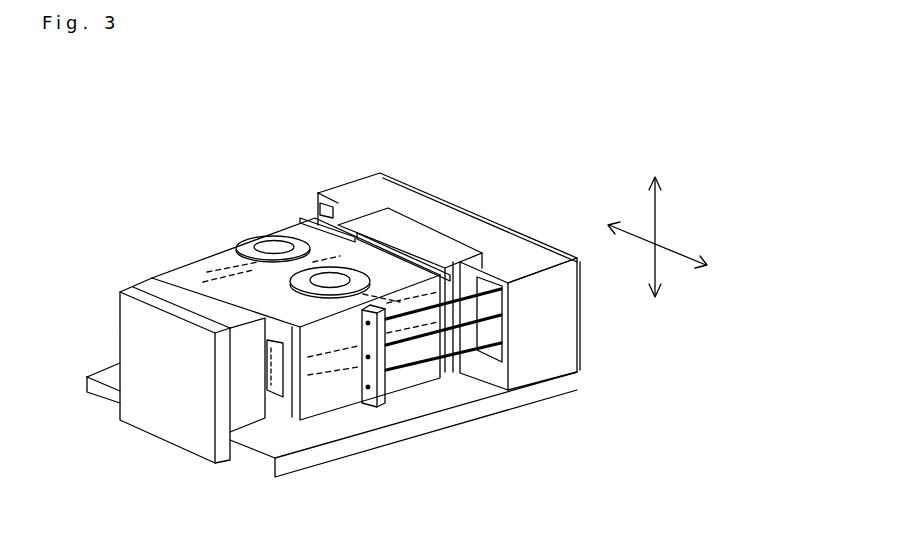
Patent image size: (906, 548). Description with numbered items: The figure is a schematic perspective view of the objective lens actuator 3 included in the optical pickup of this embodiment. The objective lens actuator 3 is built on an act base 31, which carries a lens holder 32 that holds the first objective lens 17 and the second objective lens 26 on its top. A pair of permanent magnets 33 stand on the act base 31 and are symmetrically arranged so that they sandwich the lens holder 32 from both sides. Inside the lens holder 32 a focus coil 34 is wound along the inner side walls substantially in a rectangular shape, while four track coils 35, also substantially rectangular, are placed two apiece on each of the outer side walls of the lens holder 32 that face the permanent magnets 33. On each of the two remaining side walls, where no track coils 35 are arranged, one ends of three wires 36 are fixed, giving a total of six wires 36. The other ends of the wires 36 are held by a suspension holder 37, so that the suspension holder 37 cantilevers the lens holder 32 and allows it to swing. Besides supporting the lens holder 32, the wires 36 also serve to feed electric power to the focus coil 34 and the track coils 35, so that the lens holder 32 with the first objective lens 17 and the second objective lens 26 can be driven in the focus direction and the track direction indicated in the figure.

The objective lens actuator 3 is at (191, 134).
The first objective lens 17 is at (338, 268).
The second objective lens 26 is at (258, 240).
The act base 31 is at (333, 456).
The lens holder 32 is at (188, 262).
The permanent magnets 33 is at (152, 298).
The focus coil 34 is at (292, 376).
The track coils 35 is at (156, 268).
The wires 36 is at (313, 214).
The suspension holder 37 is at (417, 204).